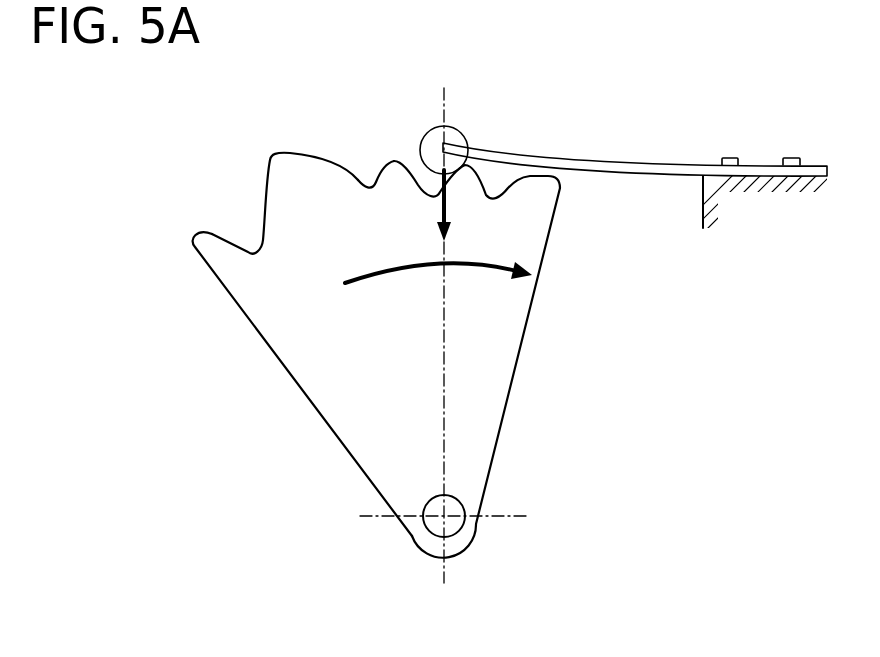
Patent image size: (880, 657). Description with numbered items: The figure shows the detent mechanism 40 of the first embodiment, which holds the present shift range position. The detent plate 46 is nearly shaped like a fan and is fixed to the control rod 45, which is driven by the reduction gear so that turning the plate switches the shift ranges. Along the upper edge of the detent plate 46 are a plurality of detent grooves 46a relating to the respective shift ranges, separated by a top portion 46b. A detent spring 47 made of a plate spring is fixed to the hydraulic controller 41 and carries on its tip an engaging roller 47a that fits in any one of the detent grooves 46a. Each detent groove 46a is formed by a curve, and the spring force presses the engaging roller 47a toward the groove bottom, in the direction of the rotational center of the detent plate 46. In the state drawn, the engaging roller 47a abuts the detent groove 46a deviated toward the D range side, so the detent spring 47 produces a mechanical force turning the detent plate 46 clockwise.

The detent mechanism 40 is at (218, 333).
The hydraulic controller 41 is at (703, 200).
The control rod 45 is at (436, 524).
The detent plate 46 is at (297, 347).
The detent grooves 46a is at (262, 248).
The top portion 46b is at (273, 156).
The detent spring 47 is at (602, 160).
The engaging roller 47a is at (462, 128).